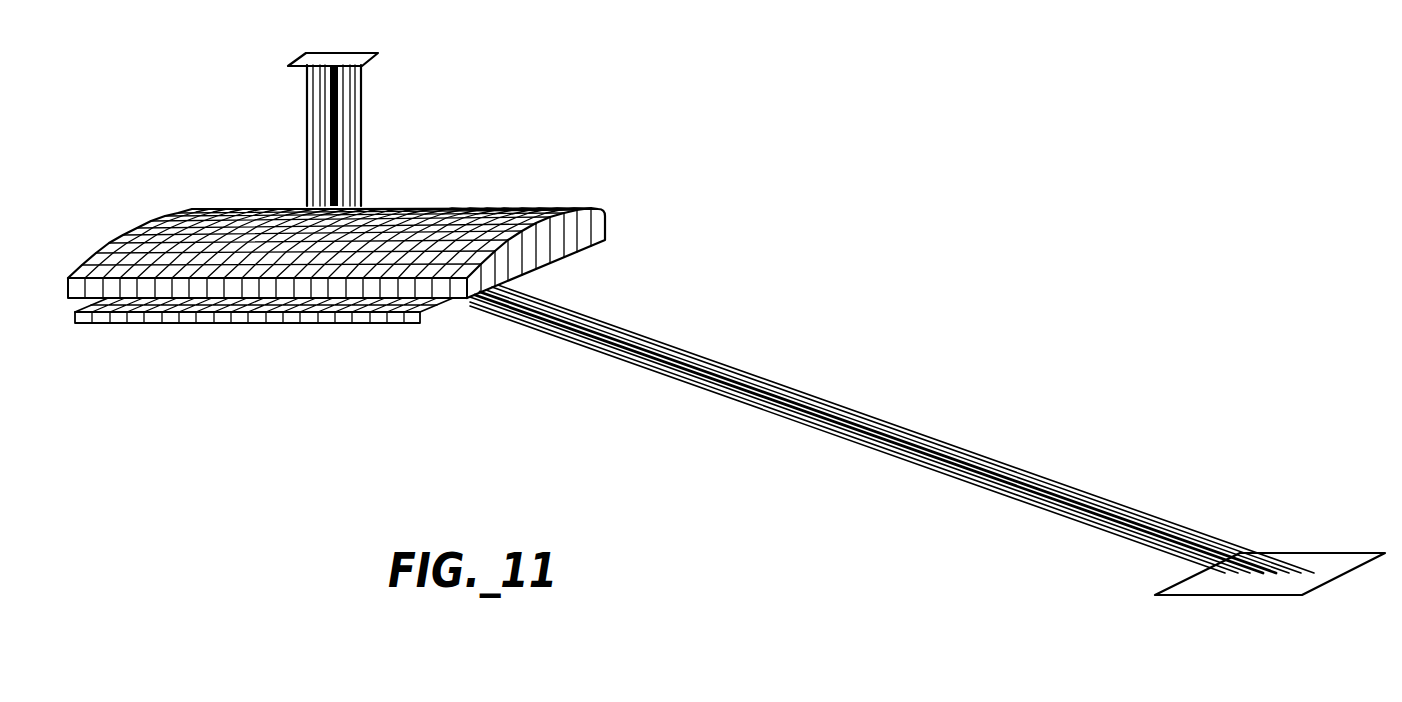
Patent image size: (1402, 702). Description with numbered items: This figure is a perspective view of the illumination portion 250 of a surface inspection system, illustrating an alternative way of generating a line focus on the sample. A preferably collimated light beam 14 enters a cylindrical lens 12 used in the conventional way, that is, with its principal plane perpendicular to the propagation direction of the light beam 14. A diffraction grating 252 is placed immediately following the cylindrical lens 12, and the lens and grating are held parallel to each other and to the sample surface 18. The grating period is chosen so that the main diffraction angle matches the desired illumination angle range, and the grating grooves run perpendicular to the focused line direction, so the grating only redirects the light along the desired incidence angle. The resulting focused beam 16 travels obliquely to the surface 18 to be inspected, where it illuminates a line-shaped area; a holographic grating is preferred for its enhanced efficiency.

The head gimbal assembly 250 is at (1042, 152).
The cylindrical lens 12 is at (530, 207).
The light beam 14 is at (363, 113).
The diffraction grating 252 is at (247, 324).
The focused beam 16 is at (657, 334).
The surface 18 is at (1331, 562).